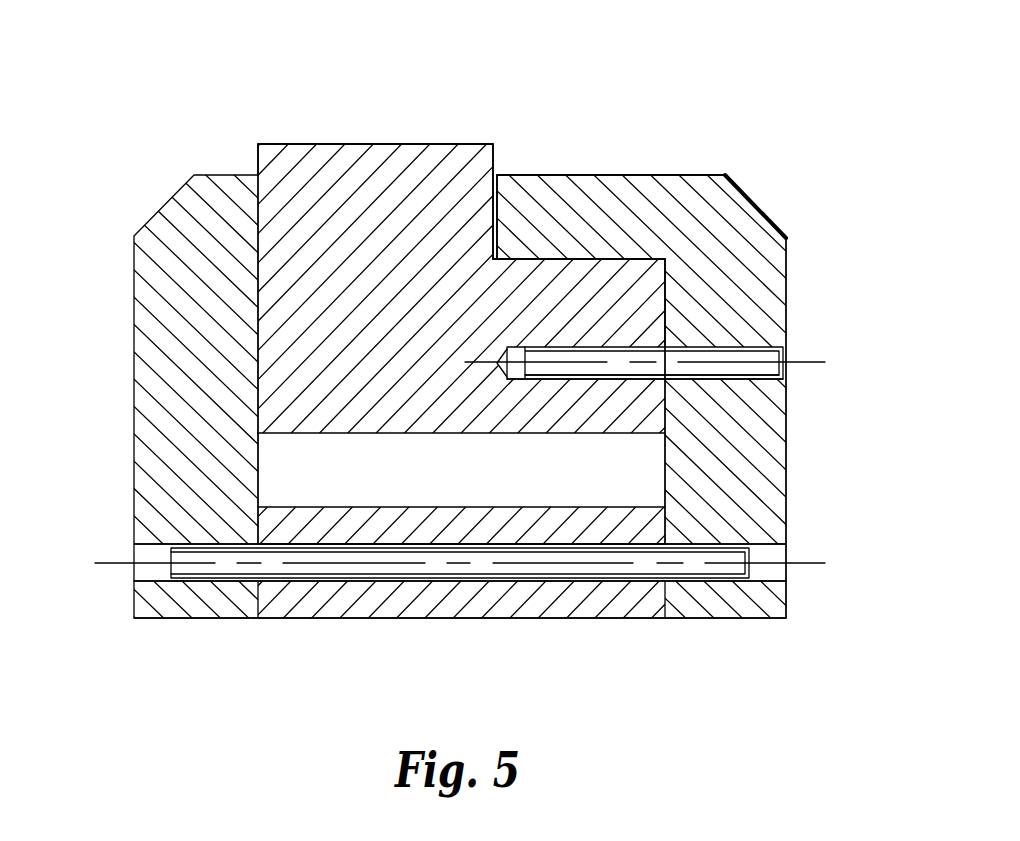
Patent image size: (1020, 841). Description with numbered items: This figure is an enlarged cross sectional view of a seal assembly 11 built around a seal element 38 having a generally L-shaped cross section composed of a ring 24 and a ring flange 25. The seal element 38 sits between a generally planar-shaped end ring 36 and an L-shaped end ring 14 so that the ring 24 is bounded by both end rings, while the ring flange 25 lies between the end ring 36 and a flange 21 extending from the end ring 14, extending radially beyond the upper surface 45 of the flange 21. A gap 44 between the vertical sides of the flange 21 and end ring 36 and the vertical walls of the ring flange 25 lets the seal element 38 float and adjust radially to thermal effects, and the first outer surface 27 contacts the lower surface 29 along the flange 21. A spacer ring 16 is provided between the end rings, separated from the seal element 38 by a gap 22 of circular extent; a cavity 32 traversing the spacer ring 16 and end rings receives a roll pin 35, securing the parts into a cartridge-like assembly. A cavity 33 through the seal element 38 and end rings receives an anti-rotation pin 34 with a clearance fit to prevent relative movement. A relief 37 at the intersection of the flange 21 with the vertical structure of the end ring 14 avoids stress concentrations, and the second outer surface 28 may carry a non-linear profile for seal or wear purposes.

The seal assembly 11 is at (757, 162).
The end ring 14 is at (770, 432).
The spacer ring 16 is at (320, 600).
The flange 21 is at (590, 192).
The gap 22 is at (641, 478).
The ring 24 is at (270, 349).
The ring flange 25 is at (322, 176).
The first outer surface 27 is at (588, 259).
The second outer surface 28 is at (396, 144).
The lower surface 29 is at (528, 258).
The cavity 32 is at (148, 572).
The cavity 33 is at (766, 349).
The anti-rotation pin 34 is at (767, 371).
The roll pin 35 is at (475, 567).
The end ring 36 is at (153, 441).
The relief 37 is at (652, 259).
The seal element 38 is at (424, 144).
The gap 44 is at (256, 170).
The upper surface 45 is at (650, 175).